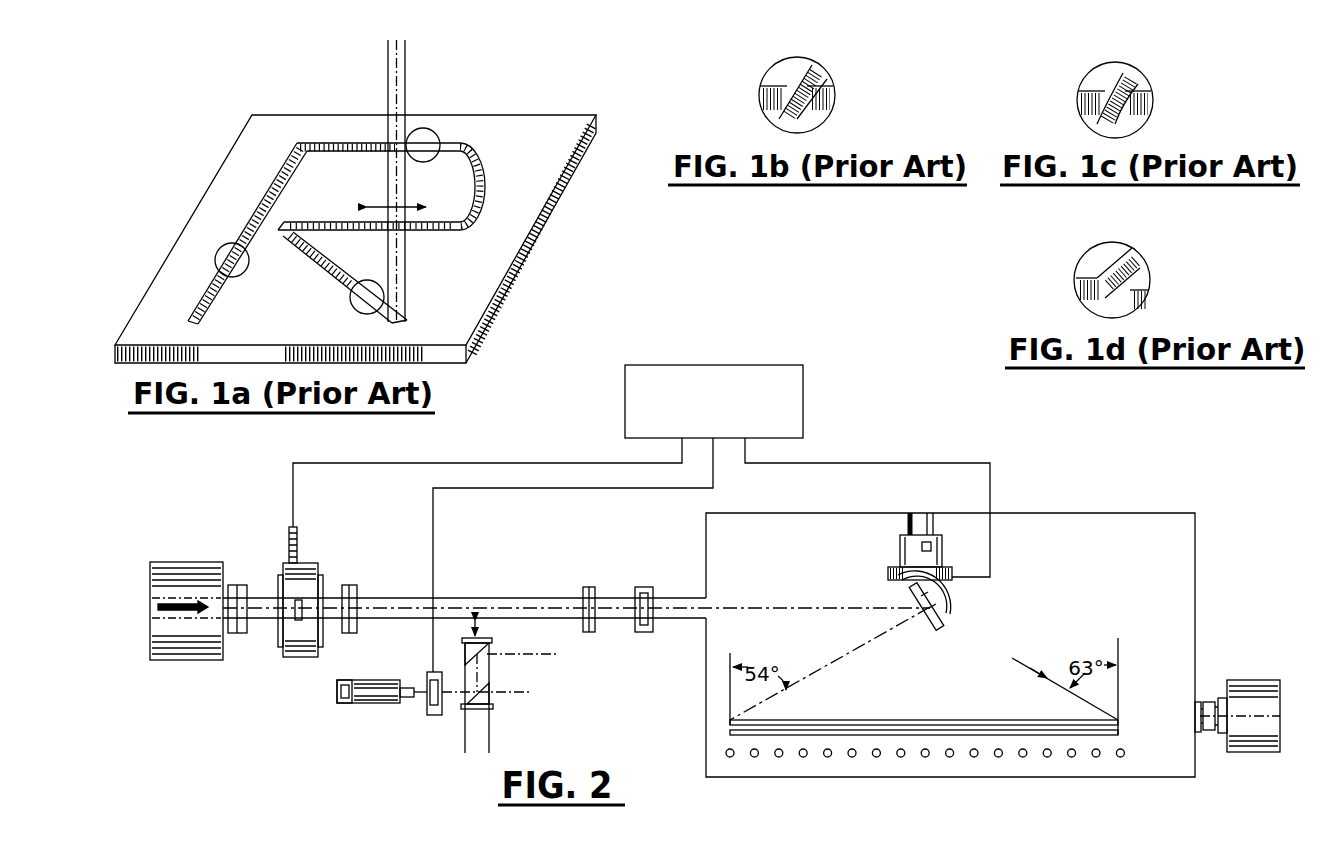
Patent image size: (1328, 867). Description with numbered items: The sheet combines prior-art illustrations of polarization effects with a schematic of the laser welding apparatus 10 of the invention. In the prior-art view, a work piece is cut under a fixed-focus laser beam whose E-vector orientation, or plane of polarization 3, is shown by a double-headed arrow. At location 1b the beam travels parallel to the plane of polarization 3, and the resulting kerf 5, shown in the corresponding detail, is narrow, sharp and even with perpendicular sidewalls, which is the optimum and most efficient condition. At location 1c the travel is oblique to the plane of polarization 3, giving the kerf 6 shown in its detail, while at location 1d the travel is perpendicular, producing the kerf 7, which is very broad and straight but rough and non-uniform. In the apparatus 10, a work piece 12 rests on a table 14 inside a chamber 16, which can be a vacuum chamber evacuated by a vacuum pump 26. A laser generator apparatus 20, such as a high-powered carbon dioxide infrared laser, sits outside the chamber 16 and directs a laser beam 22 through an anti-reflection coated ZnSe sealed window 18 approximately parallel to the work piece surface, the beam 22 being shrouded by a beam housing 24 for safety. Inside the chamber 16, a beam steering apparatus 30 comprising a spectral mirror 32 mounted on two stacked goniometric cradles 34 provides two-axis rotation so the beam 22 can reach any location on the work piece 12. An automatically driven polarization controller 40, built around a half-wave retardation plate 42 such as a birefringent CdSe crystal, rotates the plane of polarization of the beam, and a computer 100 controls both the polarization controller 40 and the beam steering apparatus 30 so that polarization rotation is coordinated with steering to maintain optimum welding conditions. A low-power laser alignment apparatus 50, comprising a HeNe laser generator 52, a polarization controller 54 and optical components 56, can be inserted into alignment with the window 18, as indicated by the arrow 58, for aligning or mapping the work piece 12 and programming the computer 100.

In FIG. 1A, the plane of polarization 3 is at (382, 203).
In FIG. 1A, the kerf 5 is at (343, 145).
In FIG. 1B, the kerf 5 is at (777, 80).
In FIG. 1A, the kerf 6 is at (335, 268).
In FIG. 1C, the kerf 6 is at (1087, 82).
In FIG. 1A, the kerf 7 is at (268, 198).
In FIG. 1D, the kerf 7 is at (1085, 258).
In FIG. 1A, the location 1b is at (440, 140).
In FIG. 1A, the location 1c is at (355, 307).
In FIG. 1A, the location 1d is at (245, 272).
In FIG. 2, the laser welding apparatus 10 is at (978, 610).
In FIG. 2, the work piece 12 is at (833, 720).
In FIG. 2, the table 14 is at (1105, 734).
In FIG. 2, the chamber 16 is at (1182, 628).
In FIG. 2, the sealed window 18 is at (655, 590).
In FIG. 2, the laser generator apparatus 20 is at (192, 562).
In FIG. 2, the laser beam 22 is at (471, 596).
In FIG. 2, the beam housing 24 is at (527, 598).
In FIG. 2, the vacuum pump 26 is at (1255, 682).
In FIG. 2, the beam steering apparatus 30 is at (896, 558).
In FIG. 2, the spectral mirror 32 is at (914, 596).
In FIG. 2, the goniometric cradles 34 is at (945, 581).
In FIG. 2, the polarization controller 40 is at (307, 563).
In FIG. 2, the half-wave retardation plate 42 is at (297, 620).
In FIG. 2, the low-power laser alignment apparatus 50 is at (509, 695).
In FIG. 2, the HeNe laser generator 52 is at (380, 704).
In FIG. 2, the polarization controller 54 is at (432, 715).
In FIG. 2, the optical components 56 is at (475, 702).
In FIG. 2, the arrow 58 is at (490, 633).
In FIG. 2, the computer 100 is at (805, 380).